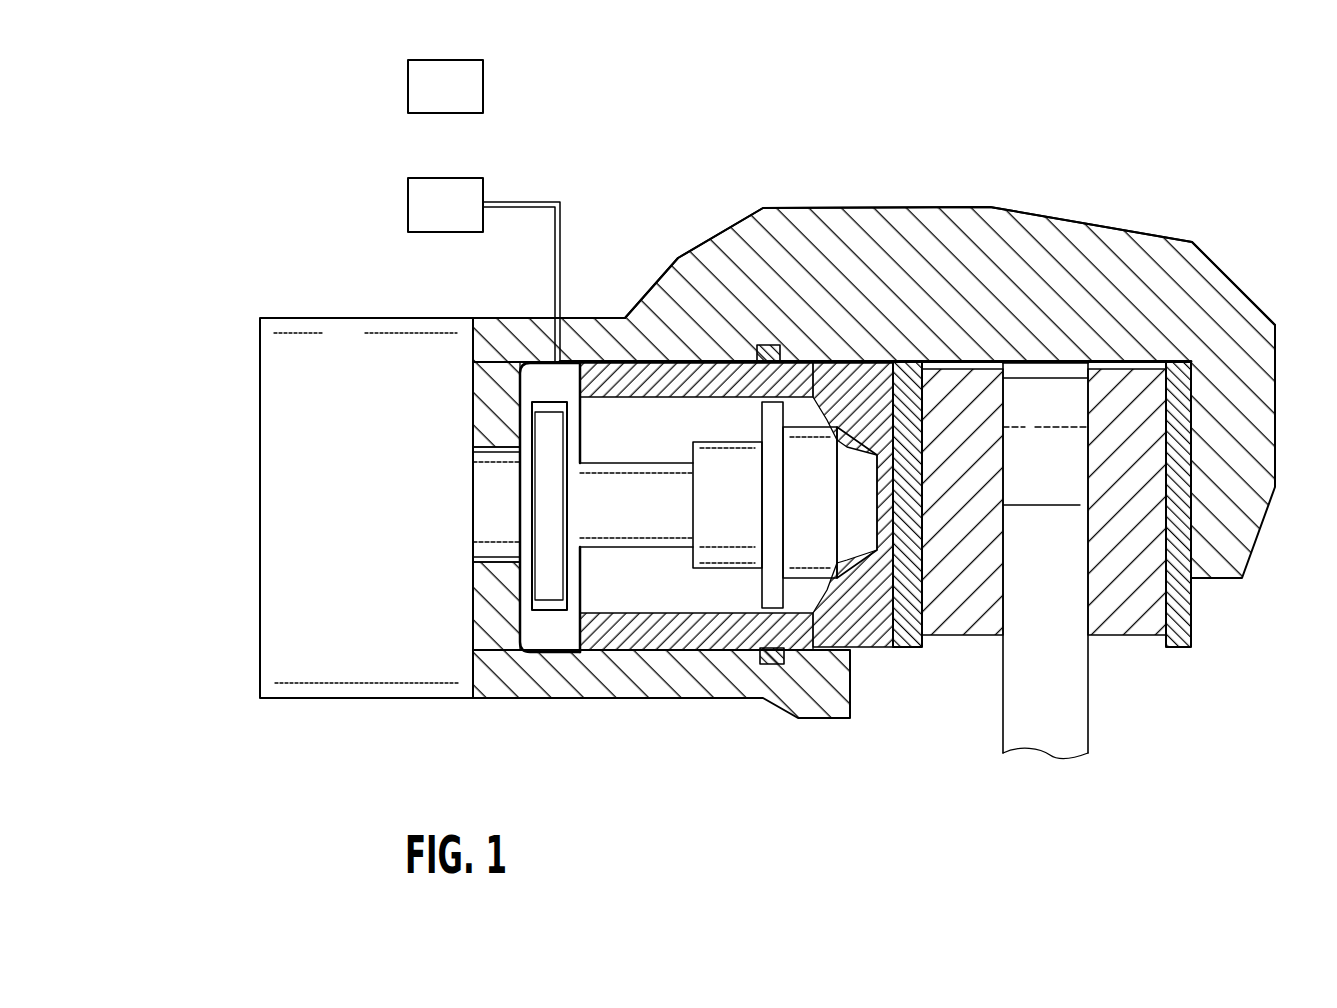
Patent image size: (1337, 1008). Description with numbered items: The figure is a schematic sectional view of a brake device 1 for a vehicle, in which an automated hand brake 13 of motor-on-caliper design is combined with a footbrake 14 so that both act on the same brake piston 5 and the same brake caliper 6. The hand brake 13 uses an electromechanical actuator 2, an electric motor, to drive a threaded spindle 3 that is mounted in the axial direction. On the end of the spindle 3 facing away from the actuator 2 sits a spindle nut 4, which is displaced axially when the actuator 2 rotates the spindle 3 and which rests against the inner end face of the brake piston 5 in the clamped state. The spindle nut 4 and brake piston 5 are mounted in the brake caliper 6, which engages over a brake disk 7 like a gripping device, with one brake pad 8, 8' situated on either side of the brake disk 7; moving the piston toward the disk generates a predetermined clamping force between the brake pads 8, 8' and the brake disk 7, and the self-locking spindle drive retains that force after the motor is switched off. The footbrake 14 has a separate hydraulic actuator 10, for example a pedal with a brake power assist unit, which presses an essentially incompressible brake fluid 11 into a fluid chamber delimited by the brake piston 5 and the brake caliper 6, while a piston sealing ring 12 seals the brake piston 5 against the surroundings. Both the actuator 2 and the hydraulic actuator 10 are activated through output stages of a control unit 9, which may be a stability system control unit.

The brake device 1 is at (1180, 185).
The electromechanical actuator 2 is at (282, 305).
The spindle 3 is at (619, 530).
The spindle nut 4 is at (718, 530).
The brake piston 5 is at (667, 620).
The brake caliper 6 is at (928, 240).
The brake disk 7 is at (1043, 728).
The brake pad 8 is at (962, 545).
The brake pad 8' is at (1139, 542).
The control unit 9 is at (428, 83).
The hydraulic actuator 10 is at (428, 202).
The brake fluid 11 is at (553, 637).
The piston sealing ring 12 is at (775, 664).
The automated hand brake 13 is at (383, 724).
The footbrake 14 is at (575, 130).